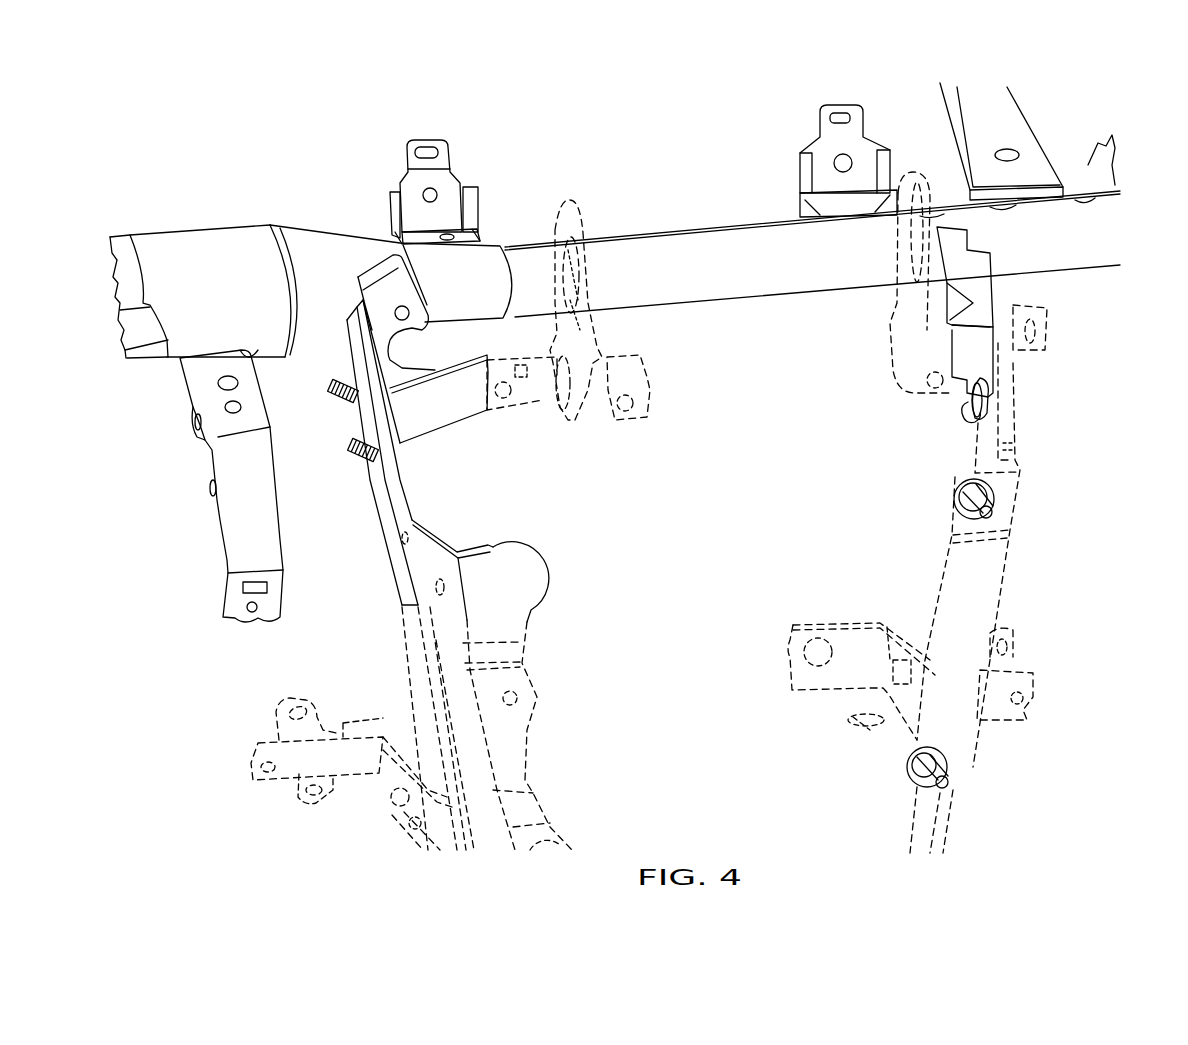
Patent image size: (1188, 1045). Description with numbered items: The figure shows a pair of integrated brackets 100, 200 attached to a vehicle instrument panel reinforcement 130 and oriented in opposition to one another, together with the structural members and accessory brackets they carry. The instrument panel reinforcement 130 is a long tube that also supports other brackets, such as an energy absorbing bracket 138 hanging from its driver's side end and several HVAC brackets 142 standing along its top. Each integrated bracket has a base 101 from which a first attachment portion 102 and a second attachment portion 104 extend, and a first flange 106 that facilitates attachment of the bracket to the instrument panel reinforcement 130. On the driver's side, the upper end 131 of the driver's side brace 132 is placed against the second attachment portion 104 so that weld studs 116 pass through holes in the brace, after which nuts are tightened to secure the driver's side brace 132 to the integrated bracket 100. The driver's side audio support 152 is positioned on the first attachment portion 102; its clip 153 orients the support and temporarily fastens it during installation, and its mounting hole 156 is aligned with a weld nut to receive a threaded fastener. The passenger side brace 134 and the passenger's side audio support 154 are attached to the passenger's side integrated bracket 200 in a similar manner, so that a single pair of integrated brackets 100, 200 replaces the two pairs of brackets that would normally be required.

The integrated bracket 100 is at (535, 452).
The base 101 is at (335, 312).
The first attachment portion 102 is at (439, 352).
The second attachment portion 104 is at (422, 458).
The first flange 106 is at (376, 262).
The weld studs 116 is at (336, 400).
The instrument panel reinforcement (IPR) 130 is at (660, 162).
The upper end 131 is at (390, 565).
The driver's side brace 132 is at (403, 641).
The passenger side brace 134 is at (998, 588).
The energy absorbing bracket 138 is at (218, 540).
The HVAC brackets 142 is at (412, 141).
The driver's side audio support 152 is at (646, 366).
The clip 153 is at (521, 365).
The passenger's side audio support 154 is at (892, 332).
The mounting hole 156 is at (512, 400).
The integrated bracket 200 is at (1015, 290).